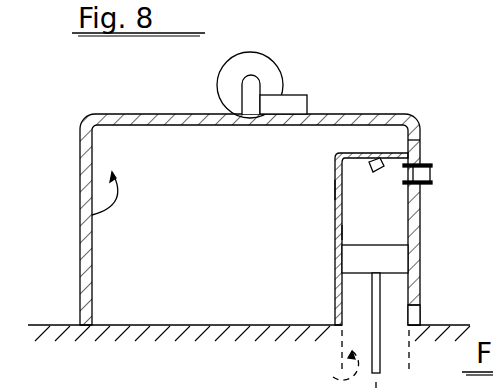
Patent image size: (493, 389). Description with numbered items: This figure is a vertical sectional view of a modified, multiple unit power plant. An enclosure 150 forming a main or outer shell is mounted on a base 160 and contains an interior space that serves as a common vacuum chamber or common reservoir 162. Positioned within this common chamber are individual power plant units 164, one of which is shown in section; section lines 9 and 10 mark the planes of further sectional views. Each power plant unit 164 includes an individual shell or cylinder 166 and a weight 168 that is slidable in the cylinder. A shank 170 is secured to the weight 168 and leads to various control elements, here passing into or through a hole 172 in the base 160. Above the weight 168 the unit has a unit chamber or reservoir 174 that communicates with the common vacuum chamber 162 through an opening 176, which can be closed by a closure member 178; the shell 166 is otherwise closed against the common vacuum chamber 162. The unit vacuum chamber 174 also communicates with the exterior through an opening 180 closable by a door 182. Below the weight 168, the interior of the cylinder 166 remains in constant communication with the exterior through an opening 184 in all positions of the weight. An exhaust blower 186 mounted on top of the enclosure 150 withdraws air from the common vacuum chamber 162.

The section line 9 is at (348, 44).
The section line 10 is at (42, 165).
The enclosure 150 is at (86, 252).
The base 160 is at (155, 332).
The common vacuum chamber 162 is at (92, 215).
The individual power plant unit 164 is at (336, 232).
The cylinder 166 is at (336, 192).
The weight 168 is at (400, 259).
The shank 170 is at (372, 300).
The hole 172 is at (341, 377).
The unit chamber 174 is at (390, 230).
The opening 176 is at (365, 155).
The closure member 178 is at (378, 173).
The opening 180 is at (430, 183).
The door 182 is at (428, 165).
The opening 184 is at (416, 317).
The exhaust blower 186 is at (270, 60).